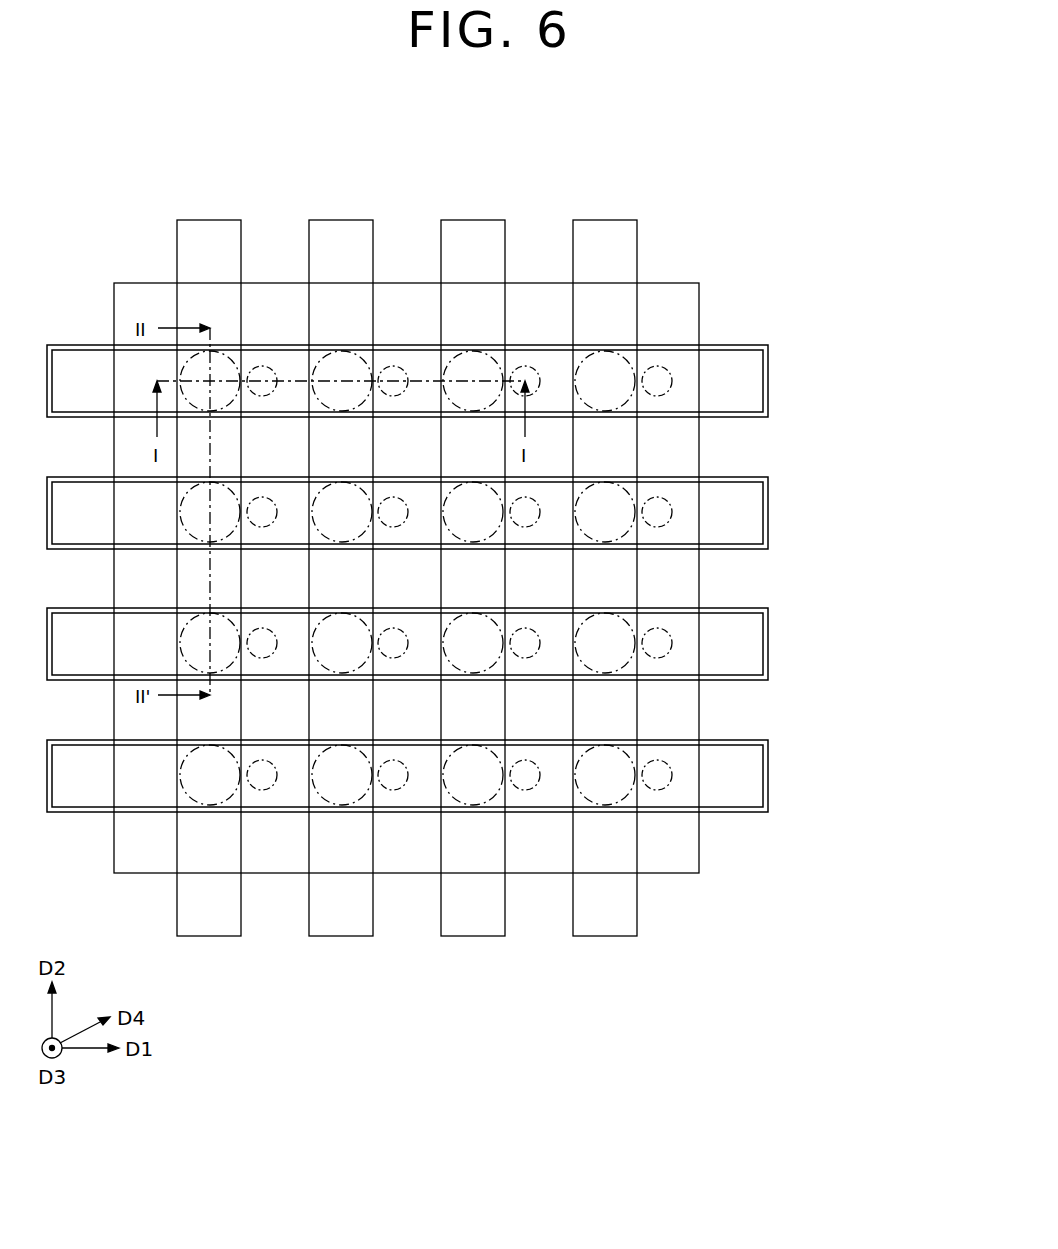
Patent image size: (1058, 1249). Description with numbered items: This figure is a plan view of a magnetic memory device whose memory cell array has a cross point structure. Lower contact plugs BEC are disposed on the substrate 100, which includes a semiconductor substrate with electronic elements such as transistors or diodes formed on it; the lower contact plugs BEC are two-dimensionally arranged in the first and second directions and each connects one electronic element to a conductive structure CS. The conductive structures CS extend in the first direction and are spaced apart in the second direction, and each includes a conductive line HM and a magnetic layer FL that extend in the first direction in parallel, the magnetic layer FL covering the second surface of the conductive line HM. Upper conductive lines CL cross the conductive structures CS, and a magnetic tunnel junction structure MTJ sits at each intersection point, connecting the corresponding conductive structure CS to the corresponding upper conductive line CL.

The substrate 100 is at (699, 841).
The upper conductive line CL is at (607, 229).
The conductive structure CS is at (479, 578).
The magnetic layer FL is at (768, 356).
The conductive line HM is at (752, 389).
The magnetic tunnel junction structure MTJ is at (630, 398).
The lower contact plug BEC is at (672, 510).